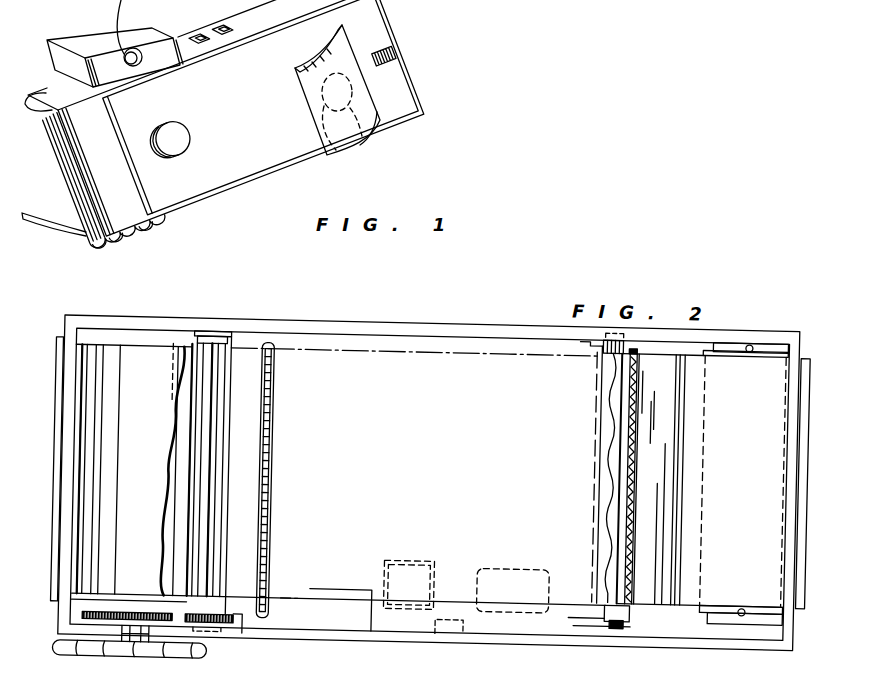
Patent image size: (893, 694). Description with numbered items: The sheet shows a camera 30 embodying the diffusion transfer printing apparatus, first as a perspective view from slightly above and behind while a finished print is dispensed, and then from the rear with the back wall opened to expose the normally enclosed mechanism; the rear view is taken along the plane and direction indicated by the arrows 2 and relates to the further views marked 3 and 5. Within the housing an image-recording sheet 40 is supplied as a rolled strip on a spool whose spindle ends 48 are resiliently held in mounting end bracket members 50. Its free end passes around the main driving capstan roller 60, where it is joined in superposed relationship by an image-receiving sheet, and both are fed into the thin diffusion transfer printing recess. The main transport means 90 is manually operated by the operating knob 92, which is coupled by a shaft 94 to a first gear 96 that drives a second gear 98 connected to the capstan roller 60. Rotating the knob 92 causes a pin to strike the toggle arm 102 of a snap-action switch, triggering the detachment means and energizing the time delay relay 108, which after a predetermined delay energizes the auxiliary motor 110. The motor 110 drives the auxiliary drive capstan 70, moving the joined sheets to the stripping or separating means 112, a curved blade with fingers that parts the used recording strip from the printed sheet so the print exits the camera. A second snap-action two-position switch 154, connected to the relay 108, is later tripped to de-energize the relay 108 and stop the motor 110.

In FIG. 1, the camera 30 is at (441, 112).
In FIG. 1, the section arrows 2— 2 is at (400, 30).
In FIG. 1, the operating knob 92 is at (152, 243).
In FIG. 2, the operating knob 92 is at (68, 655).
In FIG. 2, the image-recording sheet 40 is at (398, 342).
In FIG. 2, the toggle arm 102 is at (86, 615).
In FIG. 2, the main driving capstan roller 60 is at (215, 525).
In FIG. 2, the second gear 98 is at (254, 597).
In FIG. 2, the first gear 96 is at (116, 612).
In FIG. 2, the main transport means 90 is at (188, 598).
In FIG. 2, the shaft 94 is at (153, 645).
In FIG. 2, the time delay relay 108 is at (410, 553).
In FIG. 2, the auxiliary motor 110 is at (531, 556).
In FIG. 2, the snap-action two-position switch 154 is at (458, 592).
In FIG. 2, the stripping or separating means 112 is at (656, 405).
In FIG. 2, the resilient mounting end bracket members 50 is at (735, 328).
In FIG. 2, the spindle ends 48 is at (754, 333).
In FIG. 2, the auxiliary drive capstan 70 is at (617, 622).
In FIG. 2, the section line 3 is at (188, 583).
In FIG. 2, the section line 5 is at (62, 624).